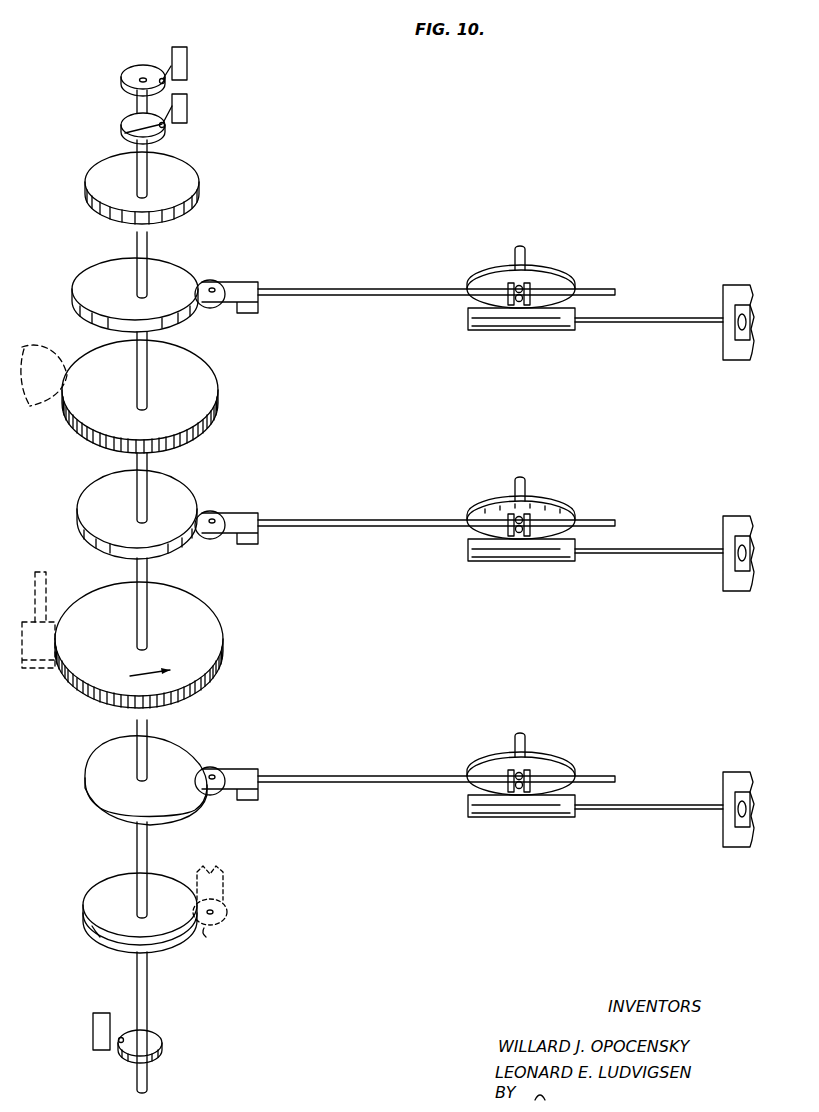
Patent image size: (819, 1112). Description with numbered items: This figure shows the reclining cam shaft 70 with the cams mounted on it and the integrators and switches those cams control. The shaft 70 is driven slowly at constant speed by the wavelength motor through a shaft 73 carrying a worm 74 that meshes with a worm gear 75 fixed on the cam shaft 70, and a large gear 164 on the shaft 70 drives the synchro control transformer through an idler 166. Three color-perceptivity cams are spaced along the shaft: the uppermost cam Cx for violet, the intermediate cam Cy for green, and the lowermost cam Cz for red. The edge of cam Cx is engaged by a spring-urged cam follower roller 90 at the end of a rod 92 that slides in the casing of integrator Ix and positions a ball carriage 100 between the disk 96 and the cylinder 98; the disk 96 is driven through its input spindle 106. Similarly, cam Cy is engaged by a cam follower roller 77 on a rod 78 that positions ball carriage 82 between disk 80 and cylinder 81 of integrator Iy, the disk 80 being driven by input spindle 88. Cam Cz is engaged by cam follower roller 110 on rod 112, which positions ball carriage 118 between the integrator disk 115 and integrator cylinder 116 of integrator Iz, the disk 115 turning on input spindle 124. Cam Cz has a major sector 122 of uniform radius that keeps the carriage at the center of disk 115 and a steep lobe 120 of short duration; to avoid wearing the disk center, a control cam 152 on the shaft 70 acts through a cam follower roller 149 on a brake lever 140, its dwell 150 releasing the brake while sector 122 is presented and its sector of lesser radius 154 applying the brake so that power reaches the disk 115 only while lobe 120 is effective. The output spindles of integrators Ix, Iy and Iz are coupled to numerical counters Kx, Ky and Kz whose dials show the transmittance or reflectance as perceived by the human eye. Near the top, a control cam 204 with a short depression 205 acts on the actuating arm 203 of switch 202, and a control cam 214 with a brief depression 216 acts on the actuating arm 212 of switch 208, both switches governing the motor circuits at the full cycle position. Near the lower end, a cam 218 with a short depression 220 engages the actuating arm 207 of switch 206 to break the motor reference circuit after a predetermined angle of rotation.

The cam shaft 70 is at (136, 247).
The switch 202 is at (190, 63).
The actuating arm 203 is at (160, 79).
The control cam 204 is at (123, 72).
The depression 205 is at (128, 88).
The switch 208 is at (190, 100).
The actuating arm 212 is at (173, 109).
The control cam 214 is at (122, 121).
The depression 216 is at (128, 131).
The cam Cx is at (86, 270).
The cam follower roller 90 is at (213, 280).
The rod 92 is at (357, 288).
The integrator disk 96 is at (474, 272).
The input spindle 106 is at (526, 256).
The ball carriage 100 is at (478, 298).
The integrator cylinder 98 is at (537, 325).
The integrator Ix is at (516, 304).
The numerical counter Kx is at (741, 283).
The idler 166 is at (33, 344).
The large gear 164 is at (200, 433).
The cam Cy is at (82, 490).
The cam follower roller 77 is at (226, 506).
The rod 78 is at (436, 499).
The integrator disk 80 is at (516, 505).
The input spindle 88 is at (540, 486).
The ball carriage 82 is at (475, 532).
The integrator cylinder 81 is at (521, 567).
The integrator Iy is at (513, 534).
The numerical counter Ky is at (671, 534).
The shaft 73 is at (36, 572).
The worm 74 is at (37, 668).
The worm gear 75 is at (199, 686).
The cam Cz is at (134, 783).
The major sector 122 is at (107, 747).
The lobe 120 is at (205, 815).
The cam follower roller 110 is at (226, 764).
The rod 112 is at (436, 755).
The integrator disk 115 is at (511, 764).
The input spindle 124 is at (543, 745).
The ball carriage 118 is at (472, 787).
The integrator cylinder 116 is at (521, 822).
The integrator Iz is at (509, 791).
The numerical counter Kz is at (666, 792).
The brake lever 140 is at (228, 874).
The cam follower roller 149 is at (209, 931).
The dwell 150 is at (121, 875).
The control cam 152 is at (82, 905).
The sector of lesser radius 154 is at (176, 950).
The actuating arm 207 is at (120, 1037).
The switch 206 is at (91, 1030).
The cam 218 is at (164, 1043).
The depression 220 is at (129, 1058).